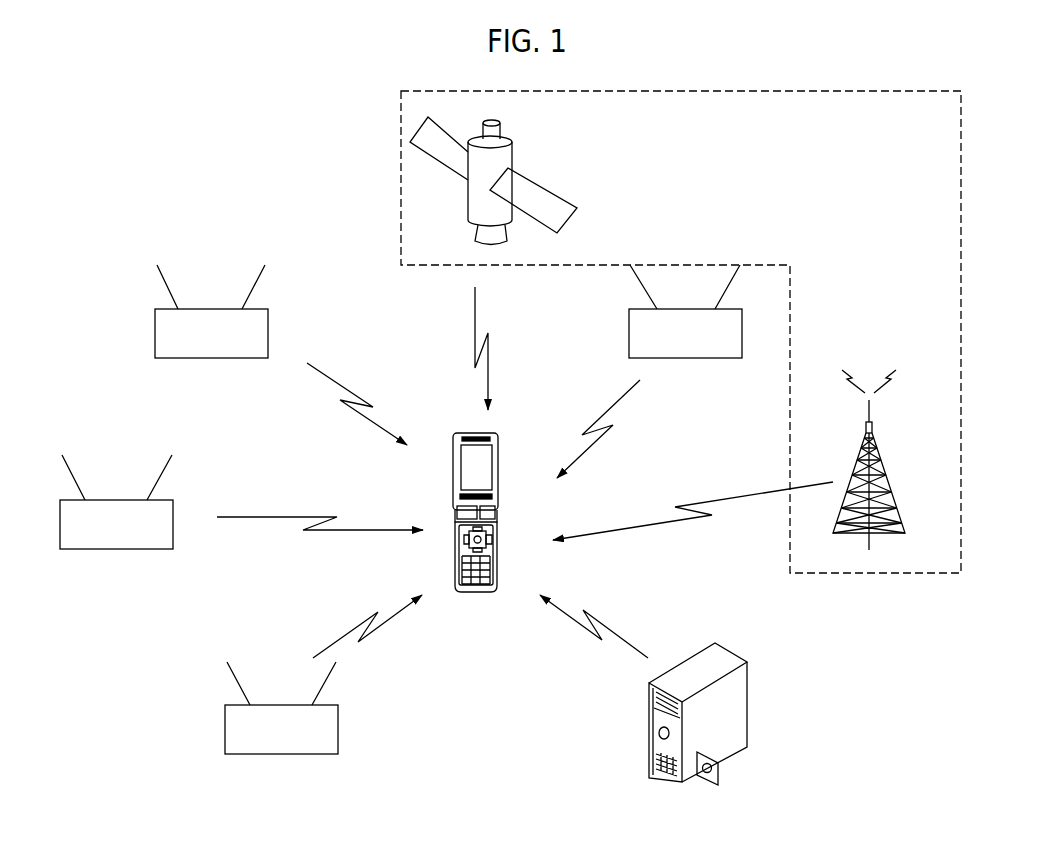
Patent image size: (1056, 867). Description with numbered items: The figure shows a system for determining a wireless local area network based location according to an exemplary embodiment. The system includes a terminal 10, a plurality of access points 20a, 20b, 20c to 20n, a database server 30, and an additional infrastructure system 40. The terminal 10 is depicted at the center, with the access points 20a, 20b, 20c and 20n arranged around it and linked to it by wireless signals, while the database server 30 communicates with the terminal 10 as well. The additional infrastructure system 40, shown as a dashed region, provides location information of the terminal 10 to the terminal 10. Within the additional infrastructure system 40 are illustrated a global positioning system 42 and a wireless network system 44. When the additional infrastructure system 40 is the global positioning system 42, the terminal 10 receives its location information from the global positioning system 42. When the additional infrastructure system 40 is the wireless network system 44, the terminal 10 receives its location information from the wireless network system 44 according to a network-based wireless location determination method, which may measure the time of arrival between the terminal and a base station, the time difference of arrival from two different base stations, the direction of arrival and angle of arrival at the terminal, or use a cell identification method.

The terminal 10 is at (498, 435).
The access point 20a is at (686, 358).
The access point 20b is at (211, 358).
The access point 20c is at (116, 549).
The access point 20n is at (281, 754).
The database server 30 is at (740, 705).
The additional infrastructure system 40 is at (962, 178).
The global positioning system 42 is at (468, 200).
The wireless network system 44 is at (893, 500).